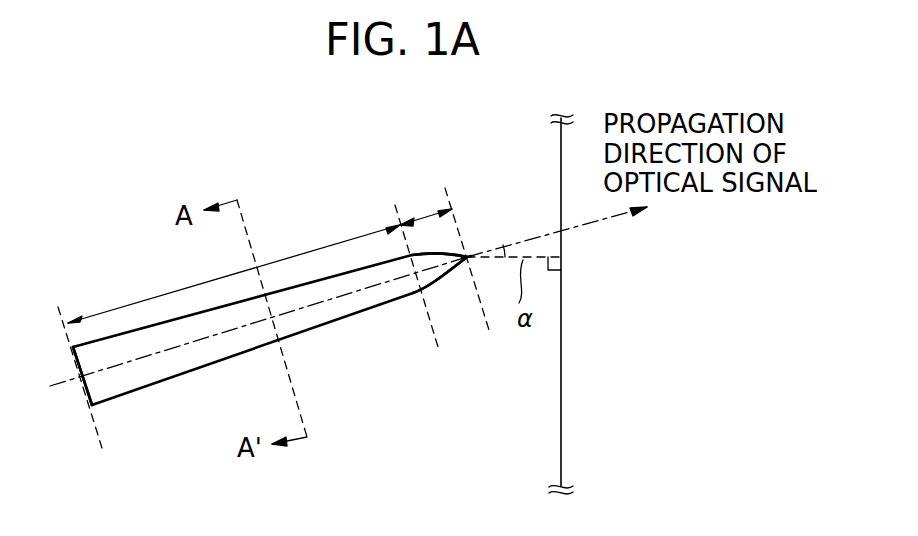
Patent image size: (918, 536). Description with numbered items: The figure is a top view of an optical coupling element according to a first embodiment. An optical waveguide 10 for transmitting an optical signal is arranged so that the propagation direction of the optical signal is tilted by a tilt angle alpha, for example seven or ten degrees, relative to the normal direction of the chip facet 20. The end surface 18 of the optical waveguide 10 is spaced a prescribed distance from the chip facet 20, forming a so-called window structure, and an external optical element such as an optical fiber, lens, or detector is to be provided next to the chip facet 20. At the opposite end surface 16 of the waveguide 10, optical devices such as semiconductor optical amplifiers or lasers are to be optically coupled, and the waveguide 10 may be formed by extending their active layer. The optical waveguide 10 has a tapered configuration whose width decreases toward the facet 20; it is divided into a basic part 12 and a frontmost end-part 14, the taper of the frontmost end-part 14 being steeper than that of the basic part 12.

The optical waveguide 10 is at (175, 377).
The basic part 12 is at (320, 247).
The frontmost end-part 14 is at (423, 215).
The end surface 16 is at (86, 389).
The end surface 18 is at (467, 257).
The chip facet 20 is at (562, 445).